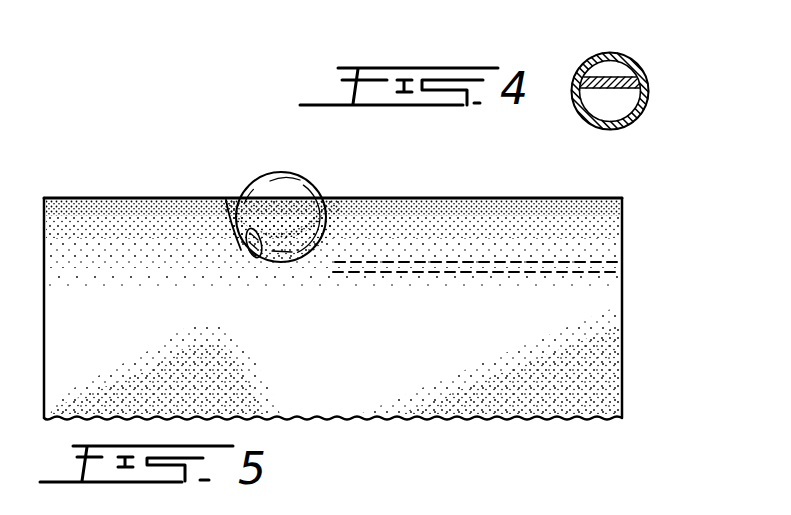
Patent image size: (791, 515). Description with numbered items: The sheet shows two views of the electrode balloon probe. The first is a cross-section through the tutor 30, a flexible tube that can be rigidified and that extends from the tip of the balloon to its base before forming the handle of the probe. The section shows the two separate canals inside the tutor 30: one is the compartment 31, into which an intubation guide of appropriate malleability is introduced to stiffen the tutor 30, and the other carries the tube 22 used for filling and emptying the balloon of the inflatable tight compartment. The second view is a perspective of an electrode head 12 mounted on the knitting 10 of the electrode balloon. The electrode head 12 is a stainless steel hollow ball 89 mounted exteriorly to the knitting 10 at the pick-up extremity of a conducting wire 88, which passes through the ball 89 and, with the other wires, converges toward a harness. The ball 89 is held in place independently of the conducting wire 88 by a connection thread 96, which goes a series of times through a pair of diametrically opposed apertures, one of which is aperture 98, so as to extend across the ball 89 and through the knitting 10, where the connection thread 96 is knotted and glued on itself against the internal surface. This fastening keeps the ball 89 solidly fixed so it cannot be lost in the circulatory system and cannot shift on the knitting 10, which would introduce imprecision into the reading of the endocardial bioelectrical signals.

In FIG. 5, the knitting 10 is at (506, 390).
In FIG. 5, the electrode head 12 is at (330, 181).
In FIG. 4, the tube 22 is at (603, 66).
In FIG. 4, the tutor 30 is at (609, 83).
In FIG. 4, the compartment 31 is at (603, 105).
In FIG. 5, the conducting wire 88 is at (551, 272).
In FIG. 5, the stainless steel hollow ball 89 is at (290, 183).
In FIG. 5, the connection thread 96 is at (249, 262).
In FIG. 5, the aperture 98 is at (226, 200).